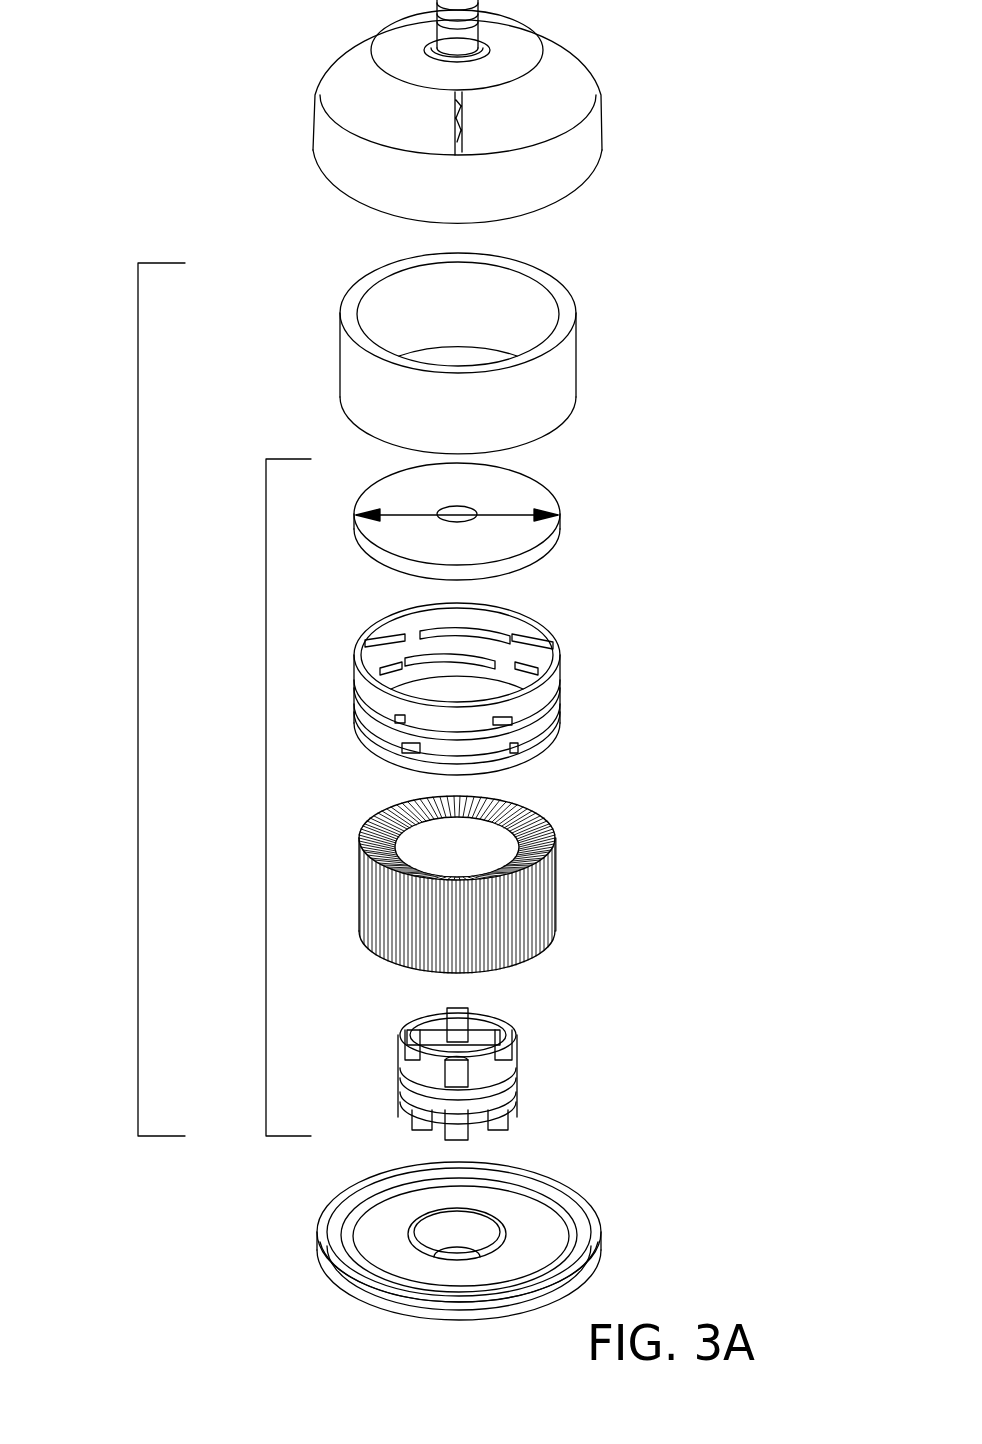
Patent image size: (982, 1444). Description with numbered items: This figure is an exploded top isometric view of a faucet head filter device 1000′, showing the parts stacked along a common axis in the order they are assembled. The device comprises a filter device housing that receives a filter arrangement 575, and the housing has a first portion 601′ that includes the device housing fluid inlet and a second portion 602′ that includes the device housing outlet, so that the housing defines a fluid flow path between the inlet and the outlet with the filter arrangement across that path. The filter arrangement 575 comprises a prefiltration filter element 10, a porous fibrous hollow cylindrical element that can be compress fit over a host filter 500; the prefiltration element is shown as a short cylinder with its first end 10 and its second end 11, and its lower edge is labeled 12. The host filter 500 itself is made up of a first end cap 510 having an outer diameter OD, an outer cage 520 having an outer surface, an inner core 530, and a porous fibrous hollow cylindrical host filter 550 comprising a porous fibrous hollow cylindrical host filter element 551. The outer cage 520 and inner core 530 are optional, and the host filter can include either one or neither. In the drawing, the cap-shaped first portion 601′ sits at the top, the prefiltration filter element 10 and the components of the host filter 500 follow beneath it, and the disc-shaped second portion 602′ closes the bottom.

The faucet head filter device 1000′ is at (277, 47).
The first portion of the filter device housing 601′ is at (572, 78).
The prefiltration filter element 10 is at (446, 346).
The second end of the prefiltration filter element 11 is at (373, 280).
The bottom edge of ring 12 is at (548, 427).
The filter arrangement 575 is at (138, 700).
The host filter 500 is at (266, 820).
The first end cap 510 is at (560, 523).
The outer cage 520 is at (560, 697).
The porous fibrous hollow cylindrical host filter 550 is at (498, 850).
The porous fibrous hollow cylindrical host filter element 551 is at (537, 830).
The inner core 530 is at (402, 1080).
The second portion of the filter device housing 602′ is at (333, 1222).